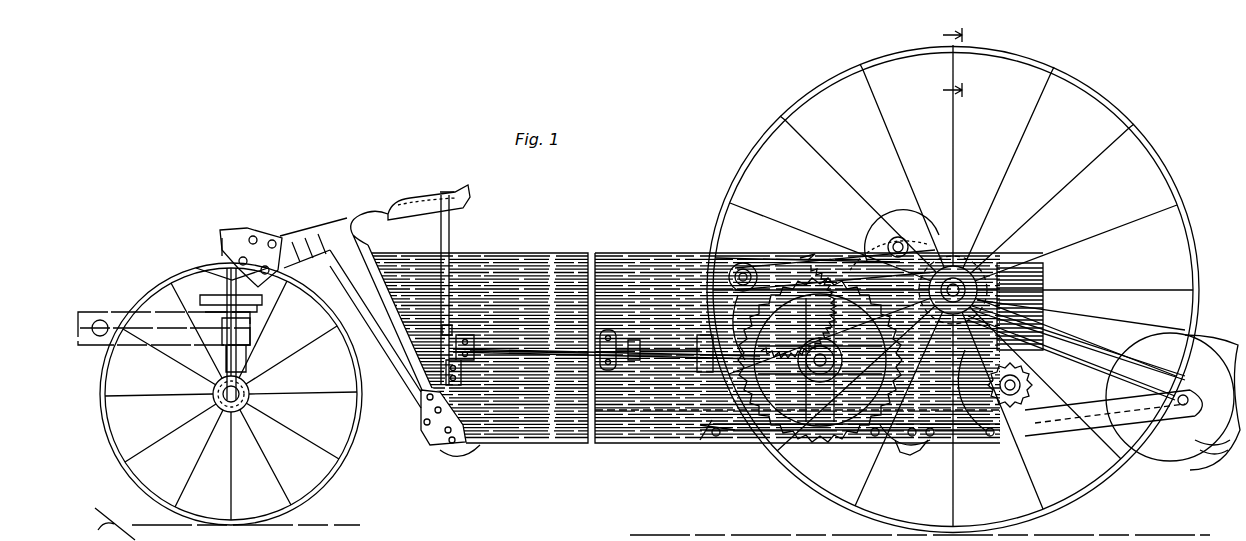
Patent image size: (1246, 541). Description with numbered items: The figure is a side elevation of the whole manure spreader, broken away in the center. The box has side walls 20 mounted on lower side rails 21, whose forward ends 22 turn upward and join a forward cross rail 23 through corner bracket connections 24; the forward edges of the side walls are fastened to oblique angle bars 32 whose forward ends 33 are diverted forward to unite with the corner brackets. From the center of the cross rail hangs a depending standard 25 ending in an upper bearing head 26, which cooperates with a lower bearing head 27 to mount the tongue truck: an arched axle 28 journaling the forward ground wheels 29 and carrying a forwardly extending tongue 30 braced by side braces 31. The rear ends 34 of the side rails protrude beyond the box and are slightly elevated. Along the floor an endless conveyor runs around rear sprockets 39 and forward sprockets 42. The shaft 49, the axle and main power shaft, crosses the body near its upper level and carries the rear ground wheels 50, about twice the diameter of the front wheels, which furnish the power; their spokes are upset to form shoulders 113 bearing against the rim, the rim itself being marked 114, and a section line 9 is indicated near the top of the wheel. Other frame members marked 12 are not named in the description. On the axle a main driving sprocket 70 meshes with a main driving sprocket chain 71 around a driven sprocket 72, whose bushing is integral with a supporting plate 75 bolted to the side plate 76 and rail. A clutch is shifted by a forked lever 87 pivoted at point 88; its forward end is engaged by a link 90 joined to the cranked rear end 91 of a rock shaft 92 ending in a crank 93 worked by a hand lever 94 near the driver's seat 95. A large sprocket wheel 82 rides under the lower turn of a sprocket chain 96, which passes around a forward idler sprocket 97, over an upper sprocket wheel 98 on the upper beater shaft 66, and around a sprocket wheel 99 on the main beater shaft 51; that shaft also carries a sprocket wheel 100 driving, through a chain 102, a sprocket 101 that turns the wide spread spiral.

The section line 9 is at (943, 62).
The frame 12 is at (712, 262).
The side walls 20 is at (701, 348).
The lower side rails 21 is at (640, 438).
The forward ends of the side rails 22 is at (395, 400).
The forward cross rail 23 is at (228, 232).
The corner bracket connections 24 is at (262, 238).
The depending standard 25 is at (212, 270).
The upper bearing head 26 is at (268, 320).
The lower bearing head 27 is at (200, 298).
The arched axle 28 is at (245, 388).
The forward ground wheels 29 is at (340, 472).
The tongue 30 is at (158, 322).
The side braces 31 is at (160, 385).
The angle bars 32 is at (390, 324).
The forward ends of the angle bars 33 is at (312, 228).
The rear ends of the side rails 34 is at (1085, 418).
The rear sprockets 39 is at (905, 450).
The forward sprockets 42 is at (462, 448).
The shaft 49 is at (952, 260).
The rear ground wheels 50 is at (1196, 230).
The main beater shaft 51 is at (1003, 405).
The upper beater shaft 66 is at (880, 250).
The main driving sprocket 70 is at (990, 270).
The main driving sprocket chain 71 is at (1040, 270).
The driven sprocket 72 is at (790, 410).
The supporting plate 75 is at (805, 425).
The side plate 76 is at (712, 440).
The large sprocket wheel 82 is at (755, 318).
The forked lever 87 is at (735, 440).
The pivot point 88 is at (698, 338).
The link 90 is at (650, 318).
The cranked rear end 91 is at (648, 352).
The rock shaft 92 is at (556, 350).
The crank 93 is at (460, 330).
The hand lever 94 is at (455, 200).
The driver's seat 95 is at (412, 200).
The sprocket chain 96 is at (451, 252).
The forward idler sprocket 97 is at (732, 262).
The upper sprocket wheel 98 is at (905, 240).
The sprocket wheel 99 is at (1022, 398).
The sprocket wheel 100 is at (1068, 340).
The sprocket 101 is at (1175, 410).
The chain 102 is at (1143, 365).
The shoulders 113 is at (868, 70).
The rim 114 is at (1040, 68).